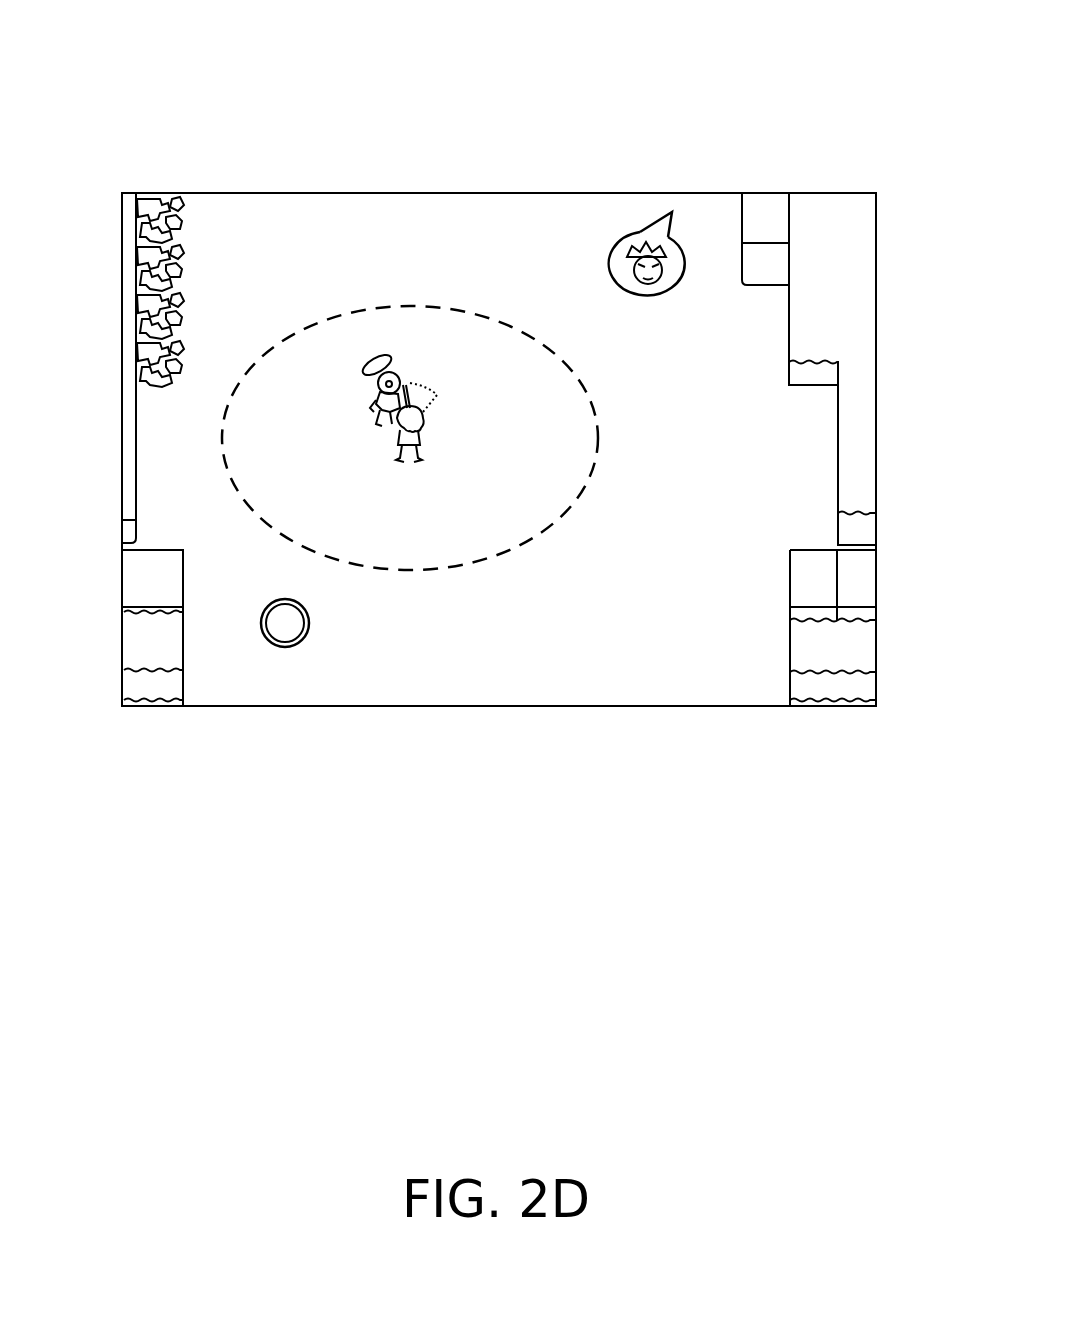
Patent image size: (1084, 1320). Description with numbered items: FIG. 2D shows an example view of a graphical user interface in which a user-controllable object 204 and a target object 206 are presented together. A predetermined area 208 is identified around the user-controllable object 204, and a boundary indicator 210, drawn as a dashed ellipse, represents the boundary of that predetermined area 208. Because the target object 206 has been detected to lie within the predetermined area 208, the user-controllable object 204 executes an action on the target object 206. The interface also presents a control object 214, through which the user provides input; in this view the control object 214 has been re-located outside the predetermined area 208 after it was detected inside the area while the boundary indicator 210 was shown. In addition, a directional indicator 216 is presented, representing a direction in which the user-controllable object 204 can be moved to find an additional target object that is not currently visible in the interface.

The user-controllable object 204 is at (416, 460).
The target object 206 is at (367, 363).
The predetermined area 208 is at (548, 498).
The boundary indicator 210 is at (508, 552).
The control object 214 is at (293, 632).
The directional indicator 216 is at (680, 252).